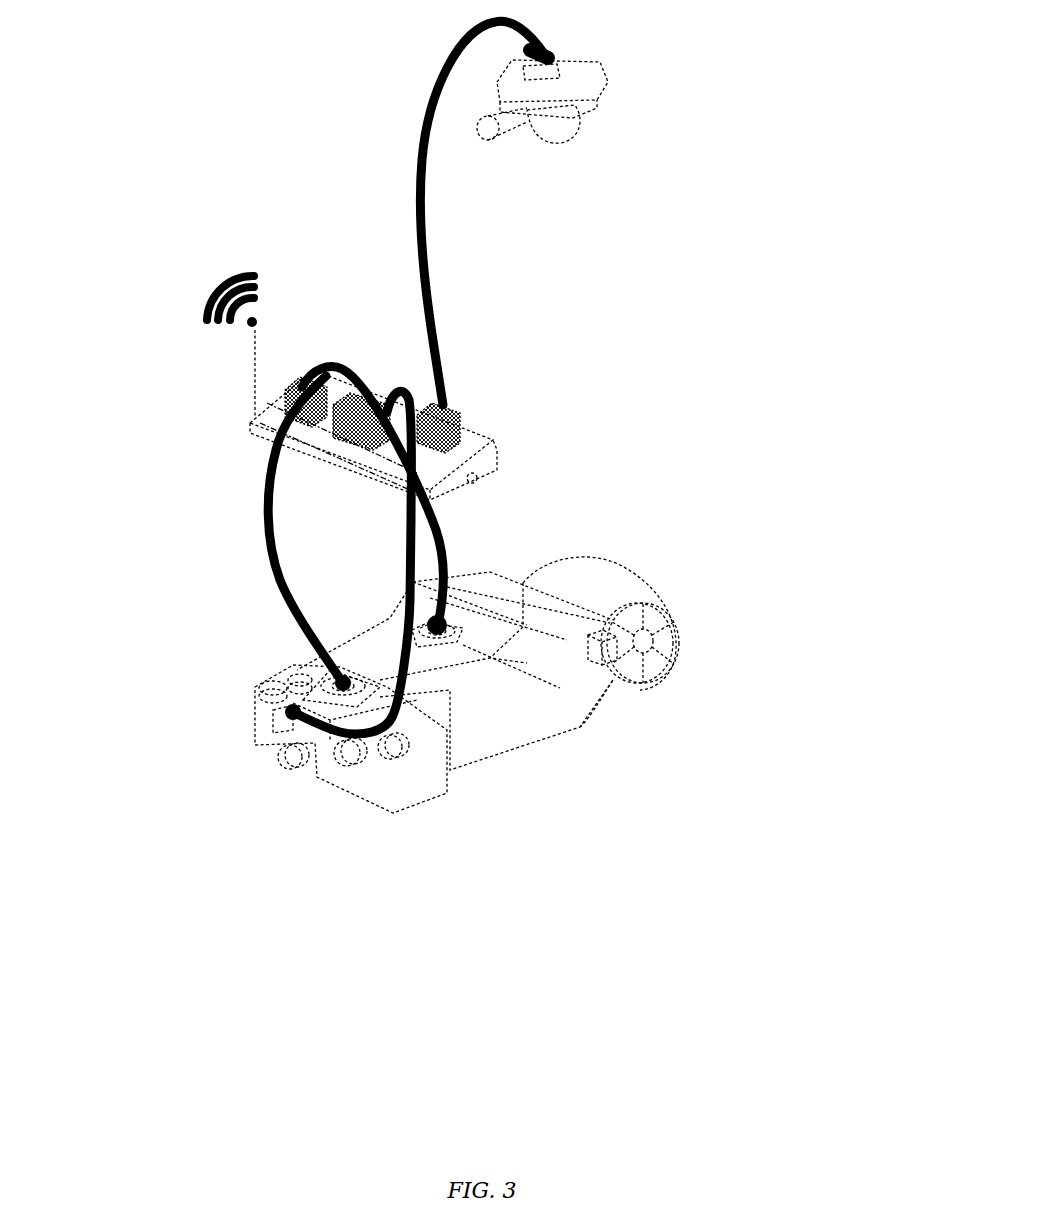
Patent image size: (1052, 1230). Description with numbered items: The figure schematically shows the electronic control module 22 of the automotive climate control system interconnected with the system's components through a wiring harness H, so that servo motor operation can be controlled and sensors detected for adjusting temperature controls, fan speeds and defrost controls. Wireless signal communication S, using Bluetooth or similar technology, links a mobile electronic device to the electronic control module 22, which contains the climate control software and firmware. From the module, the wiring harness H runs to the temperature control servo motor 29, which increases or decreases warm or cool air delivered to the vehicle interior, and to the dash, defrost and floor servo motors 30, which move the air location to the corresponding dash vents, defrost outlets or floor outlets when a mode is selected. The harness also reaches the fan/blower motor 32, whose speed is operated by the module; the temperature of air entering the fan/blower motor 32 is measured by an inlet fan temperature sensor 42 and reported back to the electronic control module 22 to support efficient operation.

The electronic control module 22 is at (518, 449).
The temperature control servo motor 29 is at (593, 128).
The dash, defrost and floor servo motors 30 is at (533, 760).
The fan/blower motor 32 is at (630, 583).
The inlet fan temperature sensor 42 is at (647, 638).
The wireless signal communication S is at (192, 300).
The wiring harness H is at (430, 362).